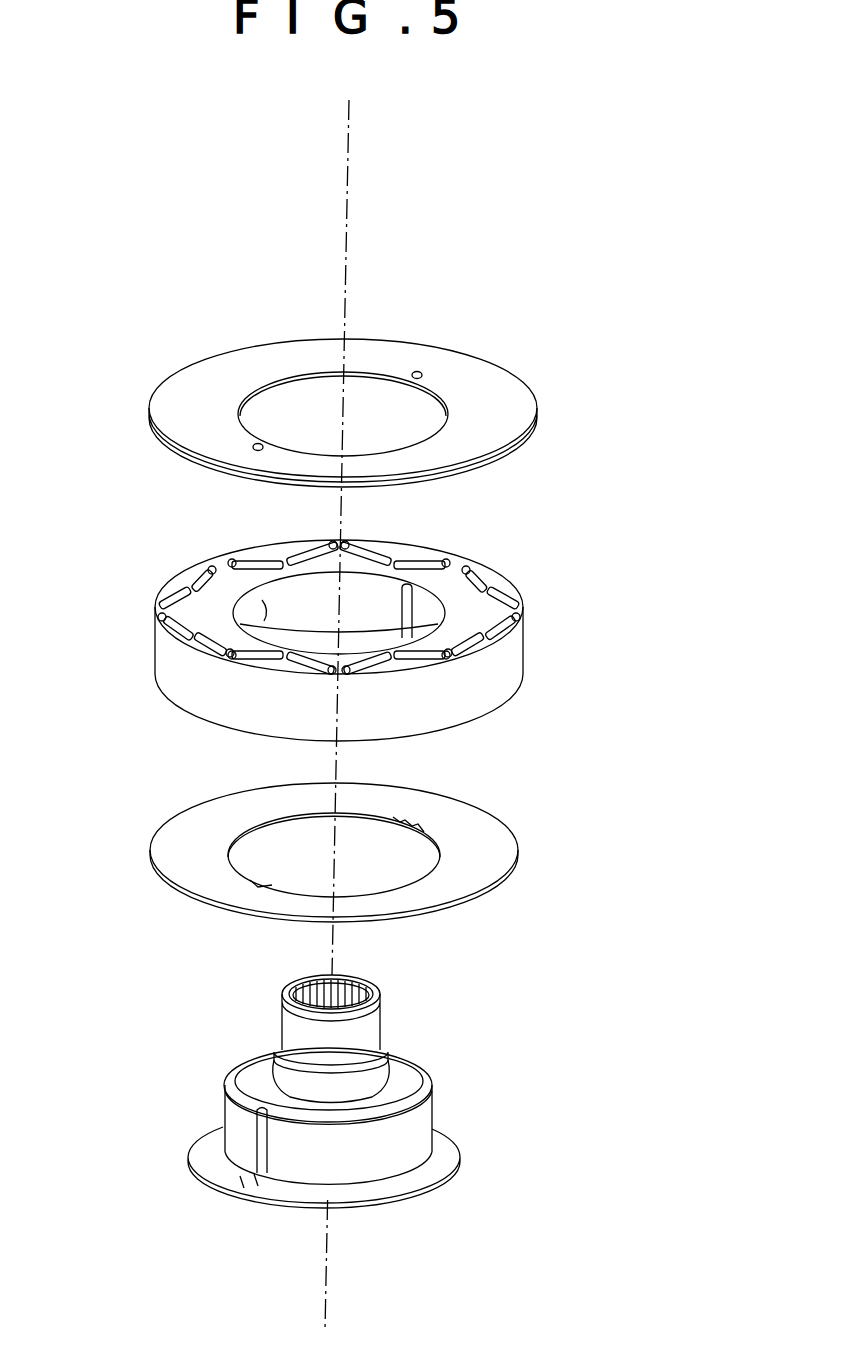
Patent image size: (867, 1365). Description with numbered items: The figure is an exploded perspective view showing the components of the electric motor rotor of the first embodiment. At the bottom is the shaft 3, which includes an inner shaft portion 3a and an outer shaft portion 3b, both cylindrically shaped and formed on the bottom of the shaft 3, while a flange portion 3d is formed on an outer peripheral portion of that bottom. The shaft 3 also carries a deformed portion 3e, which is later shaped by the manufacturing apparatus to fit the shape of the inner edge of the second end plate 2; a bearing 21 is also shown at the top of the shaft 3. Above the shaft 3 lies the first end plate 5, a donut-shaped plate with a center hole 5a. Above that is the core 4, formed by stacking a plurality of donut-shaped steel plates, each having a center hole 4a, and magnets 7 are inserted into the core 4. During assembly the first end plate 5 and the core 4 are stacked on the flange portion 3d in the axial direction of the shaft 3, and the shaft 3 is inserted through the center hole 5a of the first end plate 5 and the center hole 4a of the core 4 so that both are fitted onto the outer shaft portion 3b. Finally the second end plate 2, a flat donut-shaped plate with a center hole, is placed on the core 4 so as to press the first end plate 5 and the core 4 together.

The second end plate 2 is at (183, 402).
The core 4 is at (331, 640).
The center hole 4a is at (160, 628).
The magnets 7 is at (490, 573).
The first end plate 5 is at (294, 847).
The center hole 5a is at (266, 826).
The bearing 21 is at (370, 1035).
The shaft 3 is at (309, 1115).
The inner shaft portion 3a is at (298, 1090).
The outer shaft portion 3b is at (403, 1147).
The flange portion 3d is at (222, 1163).
The deformed portion 3e is at (405, 1082).